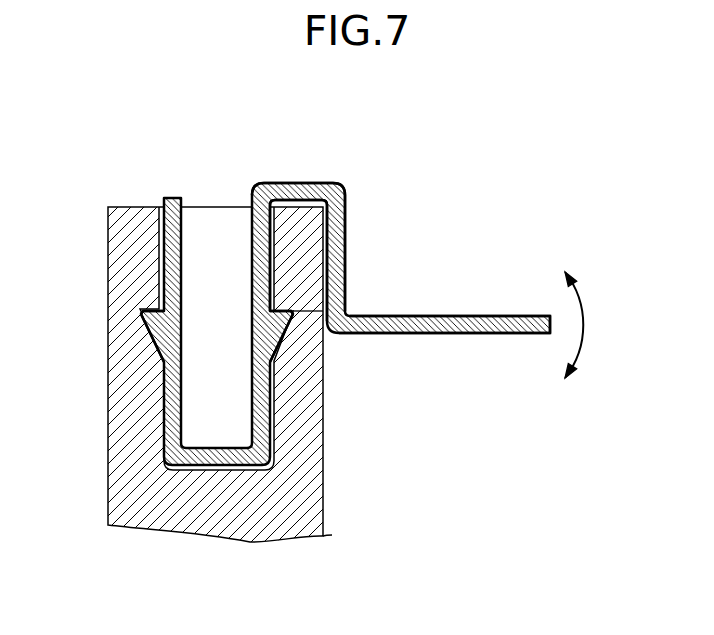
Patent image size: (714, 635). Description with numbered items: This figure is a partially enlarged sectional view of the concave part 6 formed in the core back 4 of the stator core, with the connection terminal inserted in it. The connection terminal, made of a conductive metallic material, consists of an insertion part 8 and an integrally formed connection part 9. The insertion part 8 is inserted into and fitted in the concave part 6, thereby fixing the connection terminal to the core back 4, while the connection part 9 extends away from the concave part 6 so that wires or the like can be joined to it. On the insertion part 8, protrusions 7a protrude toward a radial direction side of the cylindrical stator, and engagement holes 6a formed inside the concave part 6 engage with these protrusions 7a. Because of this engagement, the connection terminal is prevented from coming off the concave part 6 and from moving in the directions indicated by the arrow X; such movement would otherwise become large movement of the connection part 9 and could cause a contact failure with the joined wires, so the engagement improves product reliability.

The core back 4 is at (108, 283).
The concave part 6 is at (165, 226).
The insertion part 8 is at (253, 210).
The connection part 9 is at (418, 315).
The engagement hole 6a is at (142, 315).
The protrusion 7a is at (150, 338).
The arrow X is at (583, 325).